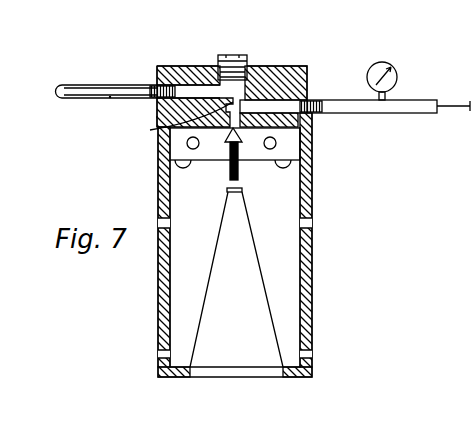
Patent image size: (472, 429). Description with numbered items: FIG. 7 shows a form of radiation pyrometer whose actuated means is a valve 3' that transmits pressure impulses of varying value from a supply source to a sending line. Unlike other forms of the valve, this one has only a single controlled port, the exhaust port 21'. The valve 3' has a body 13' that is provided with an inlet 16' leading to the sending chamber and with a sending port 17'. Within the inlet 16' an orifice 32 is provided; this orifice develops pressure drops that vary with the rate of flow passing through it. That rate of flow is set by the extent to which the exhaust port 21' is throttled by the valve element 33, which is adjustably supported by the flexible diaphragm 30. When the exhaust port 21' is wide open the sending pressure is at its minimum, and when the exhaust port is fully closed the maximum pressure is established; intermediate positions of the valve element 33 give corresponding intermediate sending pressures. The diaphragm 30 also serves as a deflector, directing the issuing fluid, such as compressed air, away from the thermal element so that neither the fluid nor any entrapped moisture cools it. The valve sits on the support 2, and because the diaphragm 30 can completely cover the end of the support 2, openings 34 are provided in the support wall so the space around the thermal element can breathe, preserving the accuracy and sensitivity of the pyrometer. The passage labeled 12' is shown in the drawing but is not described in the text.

The support 2 is at (313, 268).
The valve 3' is at (246, 96).
The inlet passage 12' is at (139, 121).
The body 13' is at (251, 61).
The inlet 16' is at (133, 105).
The sending port 17' is at (355, 93).
The exhaust port 21' is at (160, 125).
The flexible diaphragm 30 is at (280, 168).
The orifice 32 is at (110, 99).
The valve element 33 is at (245, 137).
The openings 34 is at (313, 223).